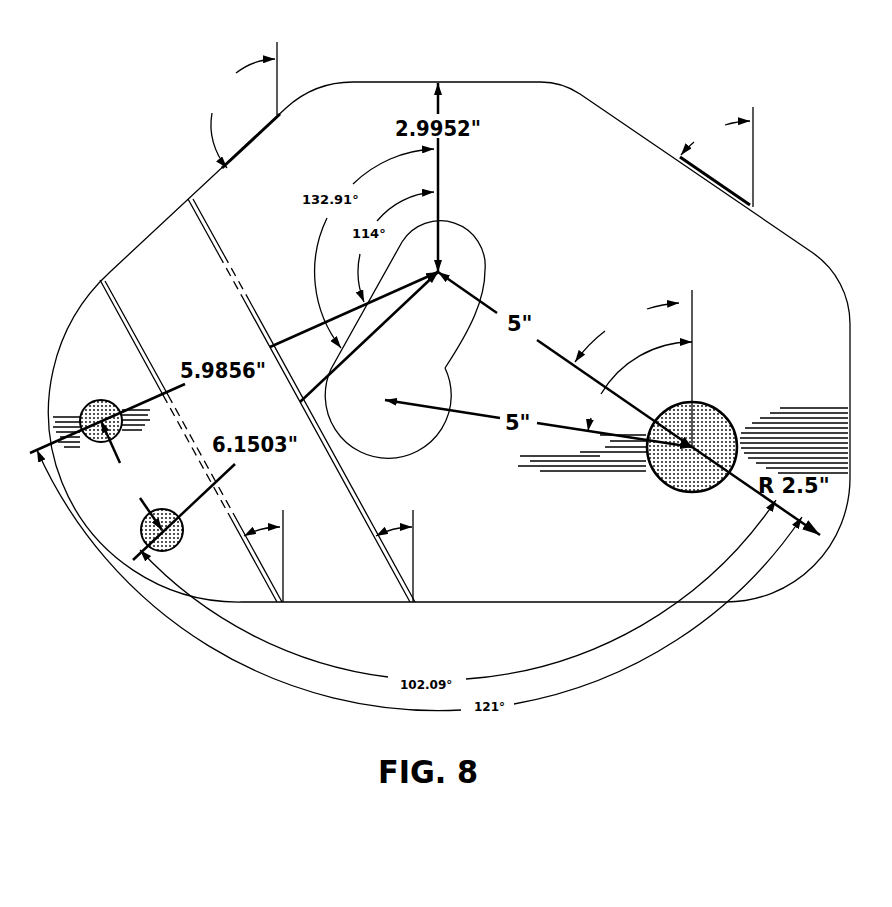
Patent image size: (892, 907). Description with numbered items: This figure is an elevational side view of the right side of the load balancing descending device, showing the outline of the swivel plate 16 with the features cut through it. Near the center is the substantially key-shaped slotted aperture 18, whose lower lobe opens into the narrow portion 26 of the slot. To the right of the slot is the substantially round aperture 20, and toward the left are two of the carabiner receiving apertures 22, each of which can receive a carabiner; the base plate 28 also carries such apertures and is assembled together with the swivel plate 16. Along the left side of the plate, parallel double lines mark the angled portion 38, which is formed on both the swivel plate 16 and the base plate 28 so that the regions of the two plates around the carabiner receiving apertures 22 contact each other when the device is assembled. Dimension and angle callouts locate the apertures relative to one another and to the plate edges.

The swivel plate 16 is at (527, 81).
The key-shaped slotted aperture 18 is at (472, 240).
The round aperture 20 is at (707, 402).
The carabiner receiving apertures 22 is at (100, 400).
The narrow portion 26 is at (472, 267).
The base plate 28 is at (423, 430).
The angled portion 38 is at (173, 240).